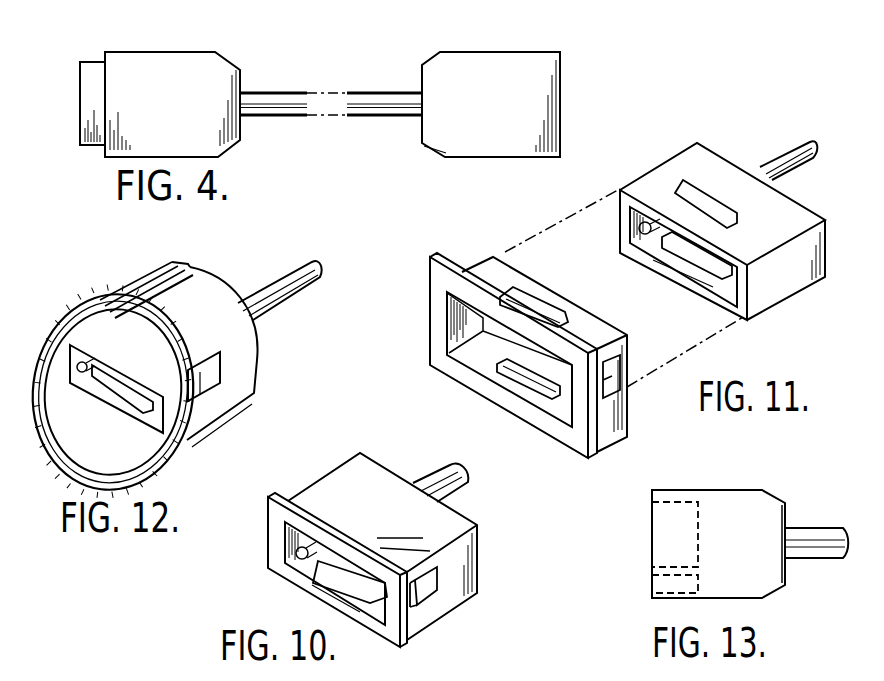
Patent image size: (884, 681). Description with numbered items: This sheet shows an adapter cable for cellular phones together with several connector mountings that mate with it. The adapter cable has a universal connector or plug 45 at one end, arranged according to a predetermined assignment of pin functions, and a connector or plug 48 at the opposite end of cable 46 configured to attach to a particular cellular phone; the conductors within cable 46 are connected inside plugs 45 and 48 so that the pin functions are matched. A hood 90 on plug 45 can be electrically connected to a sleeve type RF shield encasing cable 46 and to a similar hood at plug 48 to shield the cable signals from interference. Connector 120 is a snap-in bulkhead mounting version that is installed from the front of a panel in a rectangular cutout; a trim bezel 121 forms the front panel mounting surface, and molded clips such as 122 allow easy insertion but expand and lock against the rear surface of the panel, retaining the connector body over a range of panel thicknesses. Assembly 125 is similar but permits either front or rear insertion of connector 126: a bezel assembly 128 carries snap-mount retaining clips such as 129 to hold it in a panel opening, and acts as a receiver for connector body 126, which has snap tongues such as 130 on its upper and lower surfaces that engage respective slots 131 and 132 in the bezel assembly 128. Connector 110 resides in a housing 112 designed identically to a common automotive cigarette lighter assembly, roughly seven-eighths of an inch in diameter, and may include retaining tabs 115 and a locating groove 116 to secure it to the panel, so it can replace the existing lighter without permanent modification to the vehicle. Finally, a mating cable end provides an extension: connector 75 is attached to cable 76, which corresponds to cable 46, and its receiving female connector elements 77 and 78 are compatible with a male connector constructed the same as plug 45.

In FIG. 4, the universal connector or plug 45 is at (188, 52).
In FIG. 4, the cable 46 is at (297, 92).
In FIG. 4, the connector or plug 48 is at (440, 68).
In FIG. 4, the hood 90 is at (92, 62).
In FIG. 13, the connector 75 is at (735, 500).
In FIG. 13, the cable 76 is at (826, 533).
In FIG. 13, the receiving female connector element 77 is at (660, 518).
In FIG. 13, the receiving female connector element 78 is at (650, 583).
In FIG. 12, the connector 110 is at (256, 266).
In FIG. 12, the housing 112 is at (78, 450).
In FIG. 12, the retaining tabs 115 is at (222, 383).
In FIG. 12, the locating groove 116 is at (172, 282).
In FIG. 10, the connector 120 is at (447, 520).
In FIG. 10, the trim bezel 121 is at (283, 577).
In FIG. 10, the molded clips 122 is at (430, 590).
In FIG. 11, the assembly 125 is at (458, 238).
In FIG. 11, the connector body 126 is at (720, 163).
In FIG. 11, the bezel assembly 128 is at (610, 407).
In FIG. 11, the snap-mount retaining clips 129 is at (600, 372).
In FIG. 11, the snap tongues 130 is at (677, 190).
In FIG. 11, the slot 131 is at (530, 312).
In FIG. 11, the slot 132 is at (520, 376).